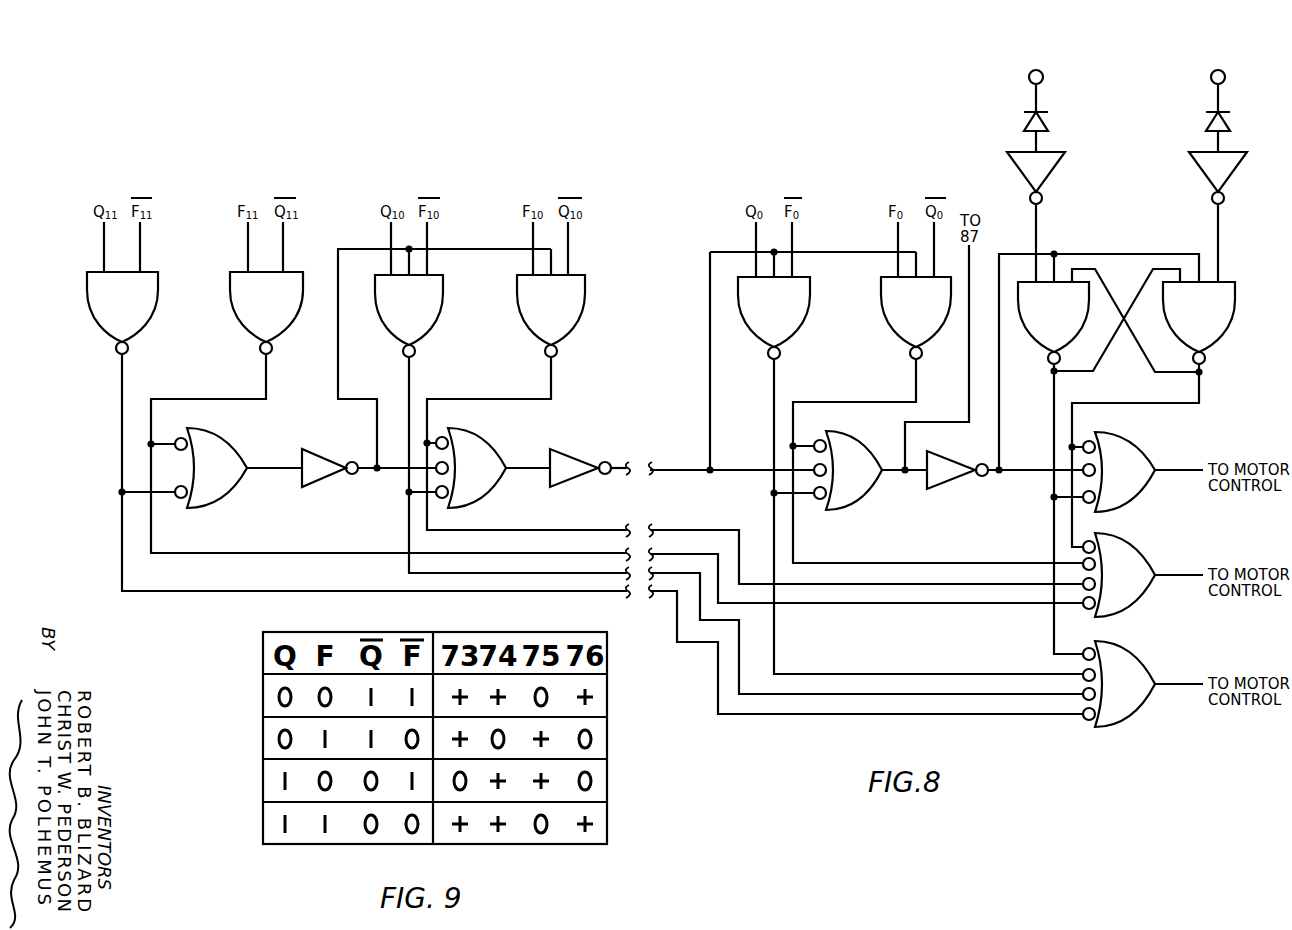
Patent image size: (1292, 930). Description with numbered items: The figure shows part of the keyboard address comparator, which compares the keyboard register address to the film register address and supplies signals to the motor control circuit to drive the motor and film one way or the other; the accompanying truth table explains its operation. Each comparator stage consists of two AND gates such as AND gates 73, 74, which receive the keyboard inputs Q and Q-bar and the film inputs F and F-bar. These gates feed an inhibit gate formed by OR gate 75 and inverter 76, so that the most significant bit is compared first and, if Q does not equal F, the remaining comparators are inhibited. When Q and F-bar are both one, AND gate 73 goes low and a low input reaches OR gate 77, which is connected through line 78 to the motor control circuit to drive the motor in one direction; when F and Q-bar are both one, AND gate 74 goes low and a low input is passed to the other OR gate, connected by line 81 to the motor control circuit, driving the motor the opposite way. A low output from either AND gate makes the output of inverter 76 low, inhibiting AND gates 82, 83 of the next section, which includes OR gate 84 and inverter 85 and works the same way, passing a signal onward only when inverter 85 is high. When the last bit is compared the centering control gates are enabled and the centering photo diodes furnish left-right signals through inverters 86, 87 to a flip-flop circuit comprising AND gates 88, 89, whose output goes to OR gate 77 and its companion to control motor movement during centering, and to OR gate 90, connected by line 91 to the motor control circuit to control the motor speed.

The AND gate 73 is at (93, 311).
The AND gate 74 is at (240, 311).
The OR gate 75 is at (224, 496).
The inverter 76 is at (322, 483).
The AND gate 82 is at (440, 312).
The AND gate 83 is at (582, 312).
The OR gate 84 is at (484, 446).
The inverter 85 is at (578, 456).
The inverter 86 is at (1052, 170).
The inverter 87 is at (1234, 170).
The AND gate 88 is at (1040, 338).
The AND gate 89 is at (1228, 336).
The OR gate 90 is at (1135, 452).
The line 91 is at (1165, 478).
The line 81 is at (1165, 582).
The line 78 is at (1168, 690).
The OR gate 77 is at (1138, 712).